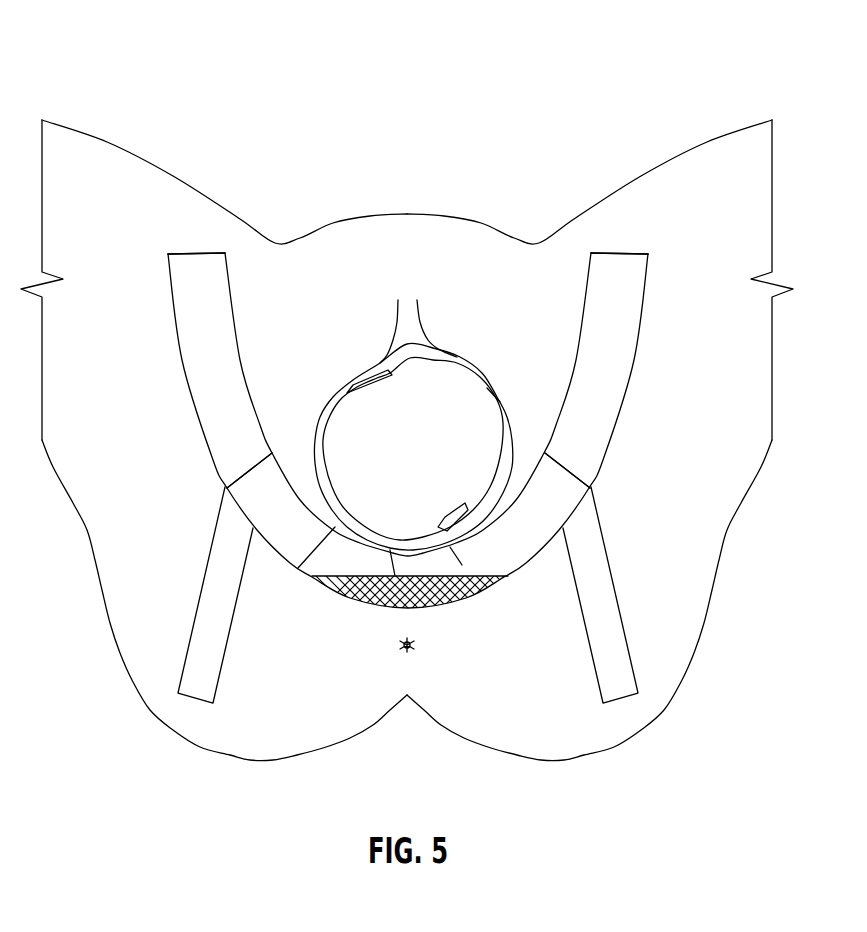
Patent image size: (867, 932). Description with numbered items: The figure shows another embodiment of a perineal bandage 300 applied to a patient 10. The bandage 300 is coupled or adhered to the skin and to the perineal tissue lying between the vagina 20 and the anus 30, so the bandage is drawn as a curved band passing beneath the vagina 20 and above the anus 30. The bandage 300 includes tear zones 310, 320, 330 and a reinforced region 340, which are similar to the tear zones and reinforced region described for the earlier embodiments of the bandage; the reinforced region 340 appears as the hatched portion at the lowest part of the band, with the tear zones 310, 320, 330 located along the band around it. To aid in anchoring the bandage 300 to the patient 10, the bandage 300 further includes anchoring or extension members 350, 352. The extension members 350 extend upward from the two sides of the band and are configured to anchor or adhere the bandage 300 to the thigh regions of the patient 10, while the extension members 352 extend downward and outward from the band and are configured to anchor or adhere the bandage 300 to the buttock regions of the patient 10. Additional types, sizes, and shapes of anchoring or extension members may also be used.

The patient 10 is at (121, 51).
The vagina 20 is at (477, 360).
The anus 30 is at (400, 647).
The perineal bandage 300 is at (191, 441).
The tear zone 310 is at (352, 548).
The tear zone 320 is at (460, 552).
The tear zone 330 is at (387, 553).
The reinforced region 340 is at (437, 597).
The extension member 350 is at (197, 360).
The extension member 352 is at (210, 587).